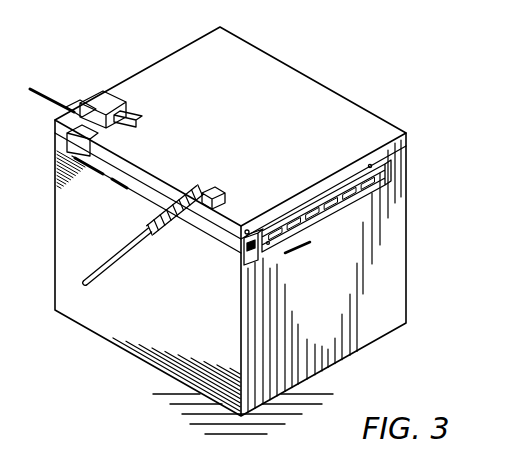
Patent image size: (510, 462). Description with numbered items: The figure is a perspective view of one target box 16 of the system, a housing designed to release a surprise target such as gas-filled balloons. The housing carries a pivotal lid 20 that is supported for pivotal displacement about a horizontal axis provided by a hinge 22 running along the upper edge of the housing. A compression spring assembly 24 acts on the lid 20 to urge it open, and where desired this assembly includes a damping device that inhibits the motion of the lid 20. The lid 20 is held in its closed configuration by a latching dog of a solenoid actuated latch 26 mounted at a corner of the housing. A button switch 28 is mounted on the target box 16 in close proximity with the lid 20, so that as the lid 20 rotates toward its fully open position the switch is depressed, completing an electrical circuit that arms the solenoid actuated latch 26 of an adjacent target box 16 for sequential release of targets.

The target box 16 is at (382, 284).
The pivotal lid 20 is at (300, 100).
The hinge 22 is at (368, 184).
The compression spring assembly 24 is at (123, 264).
The solenoid actuated latch 26 is at (93, 90).
The button switch 28 is at (242, 256).